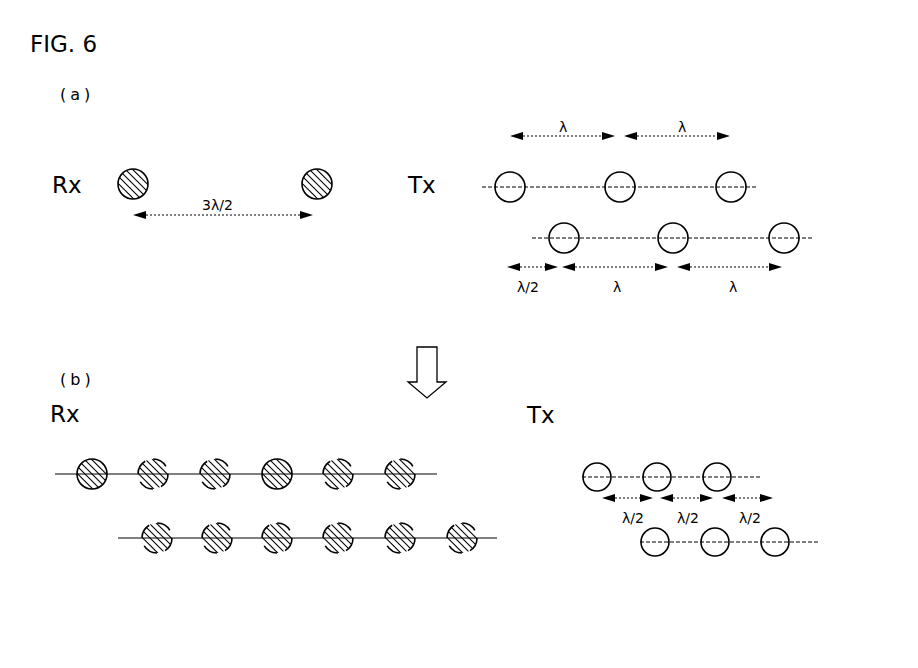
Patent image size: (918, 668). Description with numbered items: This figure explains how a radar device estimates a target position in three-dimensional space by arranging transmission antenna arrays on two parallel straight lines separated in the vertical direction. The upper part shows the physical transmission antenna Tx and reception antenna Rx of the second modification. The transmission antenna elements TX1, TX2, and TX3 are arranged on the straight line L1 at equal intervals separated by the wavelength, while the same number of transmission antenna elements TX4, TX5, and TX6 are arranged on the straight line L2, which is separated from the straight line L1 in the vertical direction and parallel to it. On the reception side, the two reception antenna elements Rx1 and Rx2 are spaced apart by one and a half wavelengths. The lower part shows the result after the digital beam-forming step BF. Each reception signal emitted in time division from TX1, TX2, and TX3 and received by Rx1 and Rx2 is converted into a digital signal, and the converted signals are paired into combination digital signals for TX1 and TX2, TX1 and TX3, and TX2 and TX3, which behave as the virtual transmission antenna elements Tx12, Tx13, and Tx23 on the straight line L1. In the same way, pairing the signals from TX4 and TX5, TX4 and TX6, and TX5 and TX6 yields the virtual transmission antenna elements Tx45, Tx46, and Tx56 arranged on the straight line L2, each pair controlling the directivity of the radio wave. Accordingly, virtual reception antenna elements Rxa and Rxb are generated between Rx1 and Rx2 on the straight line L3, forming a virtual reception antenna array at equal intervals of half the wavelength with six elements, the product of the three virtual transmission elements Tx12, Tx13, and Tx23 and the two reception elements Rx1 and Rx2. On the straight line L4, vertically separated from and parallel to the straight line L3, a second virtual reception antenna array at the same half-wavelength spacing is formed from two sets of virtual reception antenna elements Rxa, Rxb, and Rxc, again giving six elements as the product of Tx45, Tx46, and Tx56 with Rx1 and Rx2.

The reception antenna element Rx1 is at (112, 328).
The reception antenna element Rx2 is at (297, 328).
The virtual reception antenna element Rxa is at (248, 506).
The virtual reception antenna element Rxb is at (308, 506).
The virtual reception antenna element Rxc is at (369, 538).
The transmission antenna element TX1 is at (510, 175).
The transmission antenna element TX2 is at (620, 175).
The transmission antenna element TX3 is at (731, 175).
The transmission antenna element TX4 is at (564, 230).
The transmission antenna element TX5 is at (673, 230).
The transmission antenna element TX6 is at (784, 230).
The virtual transmission antenna element Tx12 is at (584, 443).
The virtual transmission antenna element Tx13 is at (645, 443).
The virtual transmission antenna element Tx23 is at (705, 443).
The virtual transmission antenna element Tx45 is at (642, 579).
The virtual transmission antenna element Tx46 is at (703, 579).
The virtual transmission antenna element Tx56 is at (763, 579).
The straight line L1 is at (619, 334).
The straight line L2 is at (674, 392).
The straight line L3 is at (237, 475).
The straight line L4 is at (298, 538).
The beam forming BF is at (427, 361).